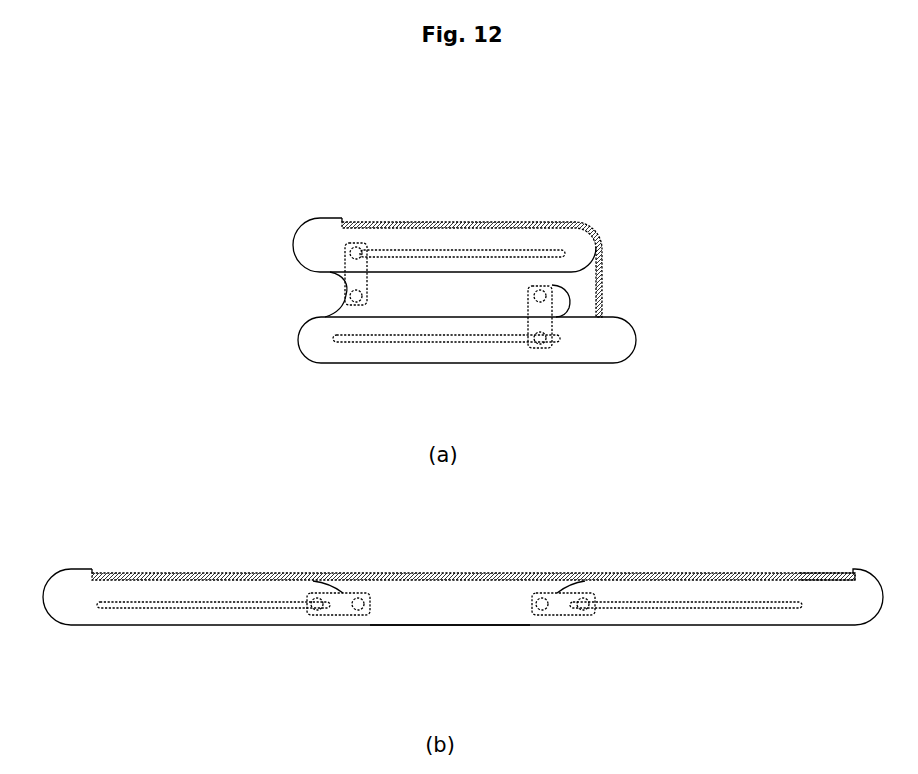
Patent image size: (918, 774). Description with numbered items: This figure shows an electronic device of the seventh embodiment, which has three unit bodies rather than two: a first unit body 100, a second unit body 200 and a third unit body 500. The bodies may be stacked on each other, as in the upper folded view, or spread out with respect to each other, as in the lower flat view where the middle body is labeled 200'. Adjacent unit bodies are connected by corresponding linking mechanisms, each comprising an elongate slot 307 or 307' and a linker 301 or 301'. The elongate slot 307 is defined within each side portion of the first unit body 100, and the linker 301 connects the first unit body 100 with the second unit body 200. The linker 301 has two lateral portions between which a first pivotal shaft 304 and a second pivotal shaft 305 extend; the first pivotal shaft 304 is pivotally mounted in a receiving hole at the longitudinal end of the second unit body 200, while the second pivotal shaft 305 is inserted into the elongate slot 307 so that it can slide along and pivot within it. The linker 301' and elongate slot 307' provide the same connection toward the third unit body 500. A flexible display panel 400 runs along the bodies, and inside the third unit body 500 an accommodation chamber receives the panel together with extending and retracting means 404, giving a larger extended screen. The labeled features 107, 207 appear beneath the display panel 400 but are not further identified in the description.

The first unit body 100 is at (296, 224).
The second unit body 200 is at (460, 338).
The hinge housing (unfolded state) 200' is at (450, 659).
The linker 301 is at (296, 468).
The linker 301' is at (554, 489).
The first pivotal shaft 304 is at (342, 297).
The second pivotal shaft 305 is at (345, 249).
The elongate slot 307 is at (331, 435).
The elongate slot 307' is at (567, 514).
The flexible display panel 400 is at (594, 224).
The extending and retracting means 404 is at (822, 574).
The third unit body 500 is at (580, 367).
The opening of first housing 107 is at (343, 582).
The opening of second housing 207 is at (558, 582).